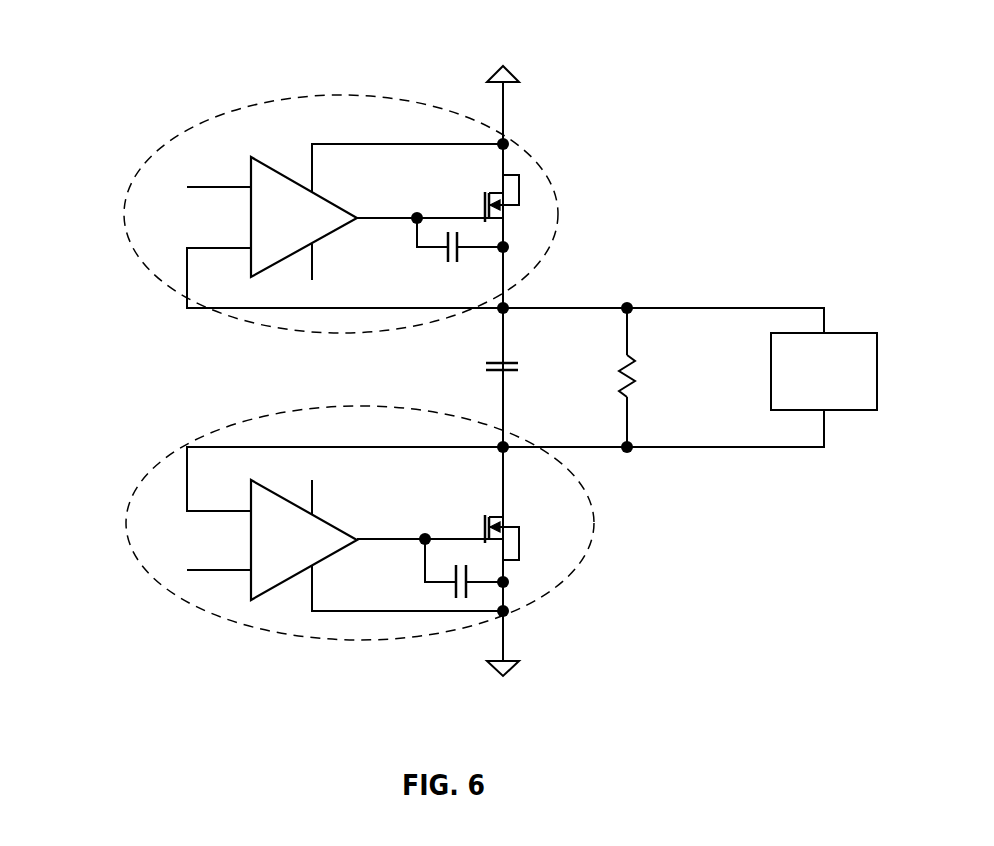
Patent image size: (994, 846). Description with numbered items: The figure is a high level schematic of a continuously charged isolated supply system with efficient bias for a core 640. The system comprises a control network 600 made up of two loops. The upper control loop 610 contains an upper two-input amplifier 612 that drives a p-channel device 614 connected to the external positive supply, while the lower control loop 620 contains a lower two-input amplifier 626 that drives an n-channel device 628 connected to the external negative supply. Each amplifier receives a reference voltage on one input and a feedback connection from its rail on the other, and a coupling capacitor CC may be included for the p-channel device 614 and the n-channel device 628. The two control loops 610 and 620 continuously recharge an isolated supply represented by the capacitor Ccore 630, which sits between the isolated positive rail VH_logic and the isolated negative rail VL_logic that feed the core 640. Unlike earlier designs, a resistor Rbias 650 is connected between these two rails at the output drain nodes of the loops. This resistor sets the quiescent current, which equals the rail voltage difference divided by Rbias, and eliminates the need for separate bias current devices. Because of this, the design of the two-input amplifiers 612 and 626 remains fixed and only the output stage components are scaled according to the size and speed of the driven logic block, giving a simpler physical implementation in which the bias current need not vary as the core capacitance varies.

The control network 600 is at (442, 377).
The upper control loop 610 is at (341, 214).
The upper two-input amplifier 612 is at (304, 217).
The p-channel device 614 is at (476, 189).
The lower control loop 620 is at (360, 523).
The lower two-input amplifier 626 is at (304, 540).
The n-channel device 628 is at (478, 519).
The capacitor Ccore 630 is at (536, 365).
The core 640 is at (824, 371).
The resistor Rbias 650 is at (675, 377).